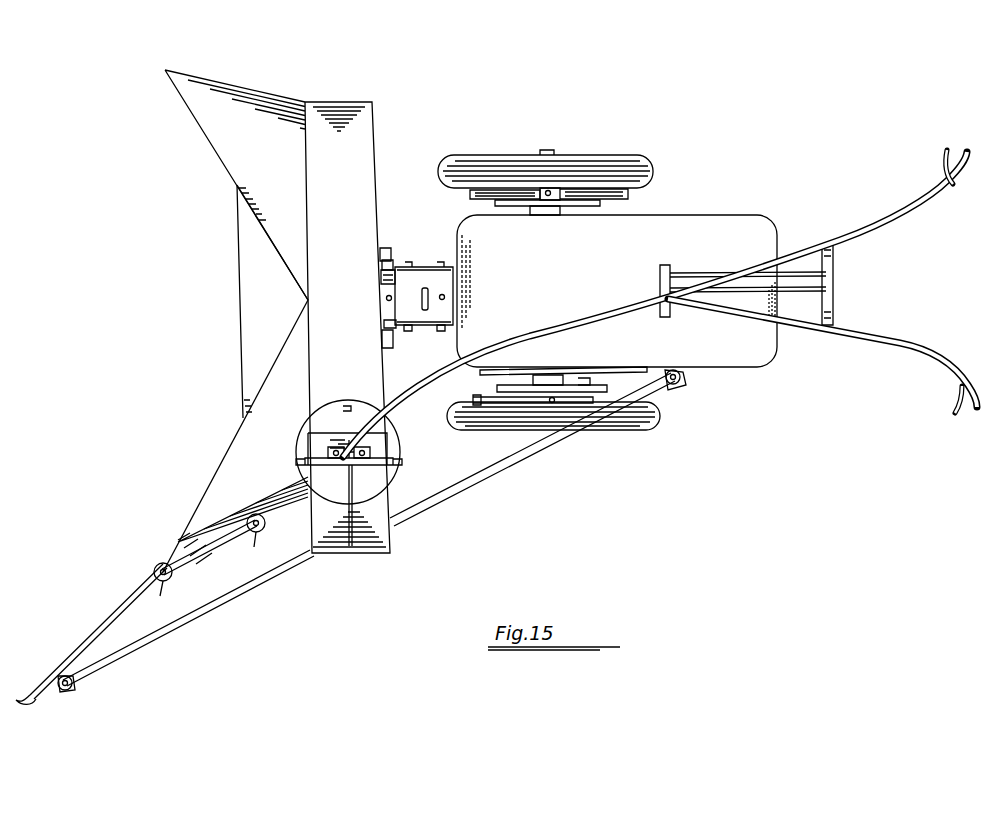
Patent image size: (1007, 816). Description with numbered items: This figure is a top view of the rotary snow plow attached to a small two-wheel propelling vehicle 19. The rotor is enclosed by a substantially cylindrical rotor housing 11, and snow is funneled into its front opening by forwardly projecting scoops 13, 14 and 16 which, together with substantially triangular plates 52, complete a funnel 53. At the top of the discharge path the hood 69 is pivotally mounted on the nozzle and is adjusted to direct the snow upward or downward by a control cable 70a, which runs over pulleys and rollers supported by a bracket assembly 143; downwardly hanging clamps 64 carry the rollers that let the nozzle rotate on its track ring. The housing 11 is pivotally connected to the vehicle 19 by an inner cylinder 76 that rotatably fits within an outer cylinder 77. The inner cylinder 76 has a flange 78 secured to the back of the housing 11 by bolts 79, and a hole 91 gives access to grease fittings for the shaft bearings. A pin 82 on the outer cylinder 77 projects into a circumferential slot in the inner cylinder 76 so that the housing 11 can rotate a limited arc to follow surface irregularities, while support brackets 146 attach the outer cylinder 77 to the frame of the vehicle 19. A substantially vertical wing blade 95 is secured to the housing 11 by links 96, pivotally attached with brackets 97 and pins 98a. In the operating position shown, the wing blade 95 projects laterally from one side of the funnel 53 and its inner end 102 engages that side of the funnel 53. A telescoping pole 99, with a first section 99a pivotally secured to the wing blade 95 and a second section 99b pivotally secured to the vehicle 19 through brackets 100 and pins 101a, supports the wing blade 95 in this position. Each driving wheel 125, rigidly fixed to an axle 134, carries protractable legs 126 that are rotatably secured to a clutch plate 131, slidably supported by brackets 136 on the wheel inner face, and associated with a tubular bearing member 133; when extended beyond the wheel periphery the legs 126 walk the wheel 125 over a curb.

The rotor housing 11 is at (322, 100).
The scoop 13 is at (248, 90).
The scoop 14 is at (294, 498).
The scoop 16 is at (445, 212).
The propelling vehicle 19 is at (718, 212).
The triangular plate 52 is at (238, 268).
The funnel 53 is at (200, 78).
The clamp 64 is at (344, 408).
The hood 69 is at (312, 445).
The control cable 70a is at (391, 536).
The inner cylinder 76 is at (392, 282).
The outer cylinder 77 is at (398, 328).
The flange 78 is at (385, 248).
The bolt 79 is at (390, 262).
The pin 82 is at (428, 288).
The hole 91 is at (386, 300).
The wing blade 95 is at (104, 617).
The link 96 is at (215, 553).
The bracket 97 is at (160, 590).
The pin 98a is at (172, 575).
The telescoping pole 99 is at (492, 484).
The first pole section 99a is at (176, 632).
The second pole section 99b is at (582, 432).
The bracket 100 is at (681, 383).
The pin 101a is at (688, 386).
The inner end of wing blade 102 is at (172, 545).
The driving wheel 125 is at (445, 158).
The protractable leg 126 is at (495, 196).
The clutch plate 131 is at (612, 207).
The bearing member 133 is at (565, 212).
The axle 134 is at (549, 151).
The bracket 136 is at (629, 193).
The bracket assembly 143 is at (400, 467).
The support bracket 146 is at (440, 331).